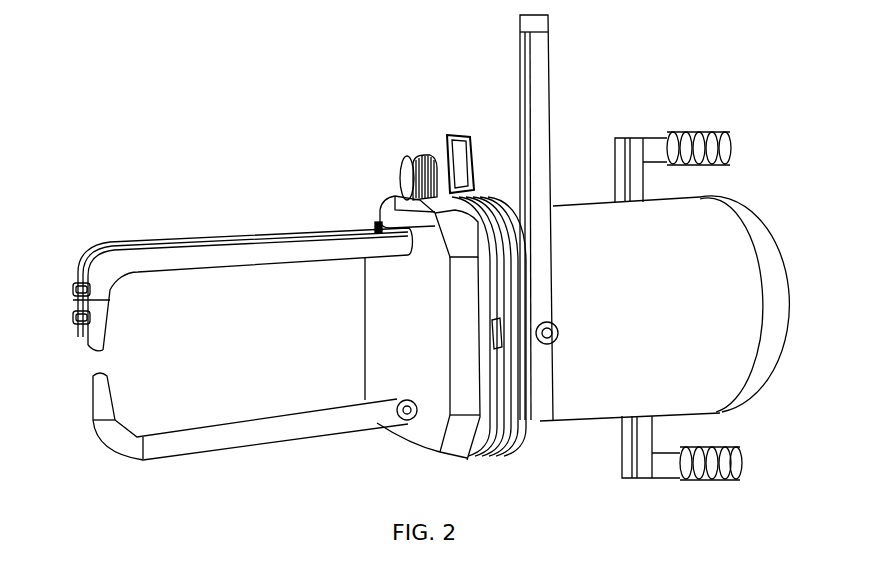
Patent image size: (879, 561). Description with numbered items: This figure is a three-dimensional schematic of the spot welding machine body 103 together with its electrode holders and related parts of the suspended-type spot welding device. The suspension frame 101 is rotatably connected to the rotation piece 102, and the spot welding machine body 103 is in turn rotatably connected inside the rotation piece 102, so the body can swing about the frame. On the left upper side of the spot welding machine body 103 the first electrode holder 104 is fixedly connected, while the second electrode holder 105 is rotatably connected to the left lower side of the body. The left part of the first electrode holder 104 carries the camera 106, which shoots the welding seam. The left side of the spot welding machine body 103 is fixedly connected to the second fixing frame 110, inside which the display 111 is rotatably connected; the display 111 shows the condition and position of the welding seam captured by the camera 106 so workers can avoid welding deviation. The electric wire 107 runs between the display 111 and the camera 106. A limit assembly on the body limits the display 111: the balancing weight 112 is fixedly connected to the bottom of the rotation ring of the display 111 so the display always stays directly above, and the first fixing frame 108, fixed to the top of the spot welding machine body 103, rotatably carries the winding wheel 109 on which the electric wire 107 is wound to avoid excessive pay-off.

The suspension frame 101 is at (542, 67).
The rotation piece 102 is at (537, 377).
The spot welding machine body 103 is at (710, 250).
The first electrode holder 104 is at (278, 252).
The second electrode holder 105 is at (260, 453).
The camera 106 is at (88, 330).
The electric wire 107 is at (352, 222).
The first fixing frame 108 is at (400, 185).
The winding wheel 109 is at (400, 167).
The second fixing frame 110 is at (486, 455).
The display 111 is at (460, 134).
The balancing weight 112 is at (477, 455).